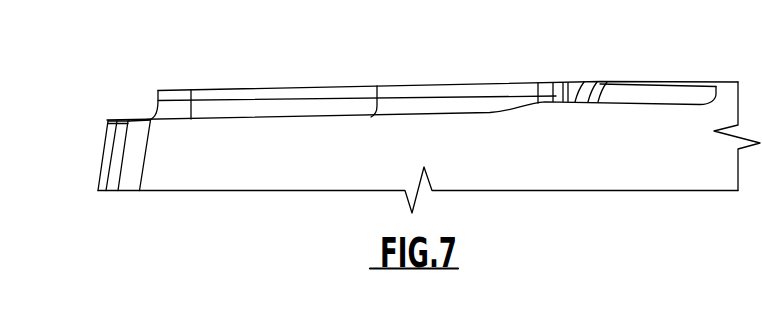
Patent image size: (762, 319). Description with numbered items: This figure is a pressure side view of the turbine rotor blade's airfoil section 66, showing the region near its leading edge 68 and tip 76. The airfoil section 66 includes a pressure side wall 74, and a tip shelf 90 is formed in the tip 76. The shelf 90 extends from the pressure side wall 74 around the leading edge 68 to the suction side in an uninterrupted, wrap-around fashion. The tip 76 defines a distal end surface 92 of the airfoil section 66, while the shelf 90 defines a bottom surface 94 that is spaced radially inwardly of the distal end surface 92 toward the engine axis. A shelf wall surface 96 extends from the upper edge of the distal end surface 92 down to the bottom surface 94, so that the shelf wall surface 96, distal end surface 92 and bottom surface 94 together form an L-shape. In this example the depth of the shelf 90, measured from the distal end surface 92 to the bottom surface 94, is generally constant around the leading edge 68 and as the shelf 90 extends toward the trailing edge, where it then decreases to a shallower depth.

The airfoil section 66 is at (562, 172).
The leading edge 68 is at (98, 158).
The pressure side wall 74 is at (660, 149).
The tip 76 is at (210, 90).
The tip shelf 90 is at (138, 120).
The distal end surface 92 is at (490, 81).
The bottom surface 94 is at (315, 119).
The shelf wall surface 96 is at (357, 98).